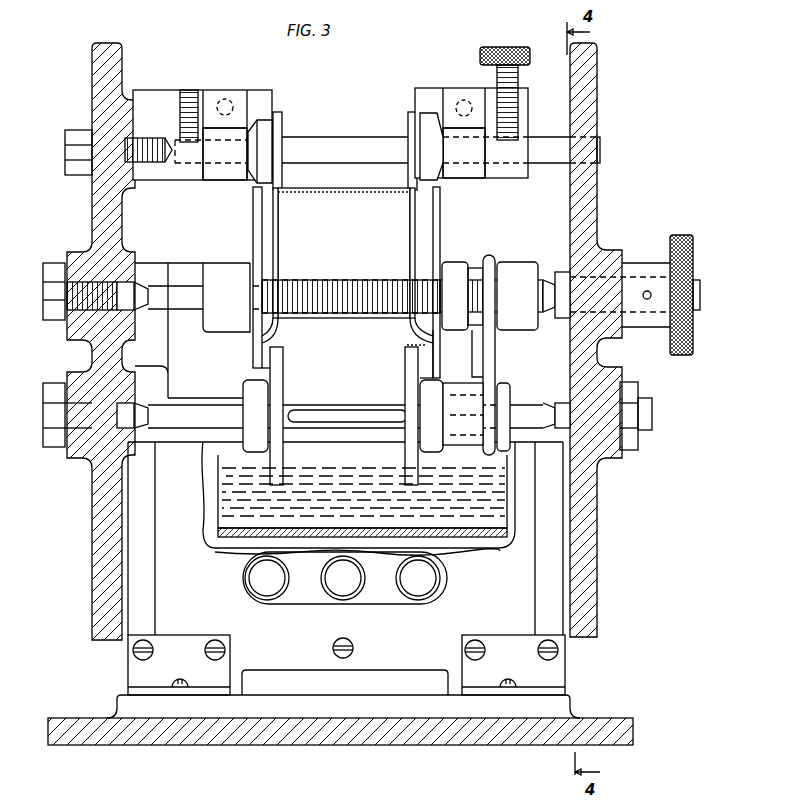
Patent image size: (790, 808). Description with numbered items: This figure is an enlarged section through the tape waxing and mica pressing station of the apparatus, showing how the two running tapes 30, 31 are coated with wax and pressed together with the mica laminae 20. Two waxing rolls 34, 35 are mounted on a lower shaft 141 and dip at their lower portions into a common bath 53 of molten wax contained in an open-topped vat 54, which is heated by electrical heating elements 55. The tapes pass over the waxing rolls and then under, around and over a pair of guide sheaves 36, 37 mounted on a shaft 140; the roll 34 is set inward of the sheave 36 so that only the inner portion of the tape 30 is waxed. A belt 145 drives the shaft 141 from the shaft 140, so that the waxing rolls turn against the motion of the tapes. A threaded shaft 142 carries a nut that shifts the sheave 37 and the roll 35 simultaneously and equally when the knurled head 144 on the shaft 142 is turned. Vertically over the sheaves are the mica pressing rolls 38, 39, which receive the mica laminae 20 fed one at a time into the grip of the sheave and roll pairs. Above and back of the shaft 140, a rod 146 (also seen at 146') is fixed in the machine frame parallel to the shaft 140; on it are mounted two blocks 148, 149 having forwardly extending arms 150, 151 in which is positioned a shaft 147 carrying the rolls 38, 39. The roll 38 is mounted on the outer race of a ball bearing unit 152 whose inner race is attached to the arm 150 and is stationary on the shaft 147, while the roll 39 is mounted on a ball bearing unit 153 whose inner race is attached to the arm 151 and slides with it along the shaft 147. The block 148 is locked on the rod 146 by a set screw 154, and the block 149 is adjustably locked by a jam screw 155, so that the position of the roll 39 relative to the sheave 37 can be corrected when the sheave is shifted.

The mica laminae 20 is at (334, 197).
The tape 30 is at (272, 226).
The tape 31 is at (418, 226).
The waxing roll 34 is at (283, 366).
The waxing roll 35 is at (405, 368).
The guide sheave 36 is at (253, 226).
The guide sheave 37 is at (440, 226).
The mica pressing roll 38 is at (280, 124).
The mica pressing roll 39 is at (410, 125).
The bath 53 is at (482, 523).
The vat 54 is at (535, 573).
The electrical heating elements 55 is at (265, 588).
The shaft 140 is at (326, 287).
The shaft 141 is at (356, 408).
The threaded shaft 142 is at (348, 277).
The knurled head 144 is at (674, 355).
The belt 145 is at (497, 366).
The rod 146 is at (564, 172).
The shaft end 146' is at (199, 173).
The shaft 147 is at (317, 143).
The block 148 is at (160, 97).
The block 149 is at (508, 172).
The arm 150 is at (219, 170).
The arm 151 is at (478, 173).
The ball bearing unit 152 is at (264, 122).
The ball bearing unit 153 is at (428, 117).
The set screw 154 is at (197, 90).
The jam screw 155 is at (495, 48).